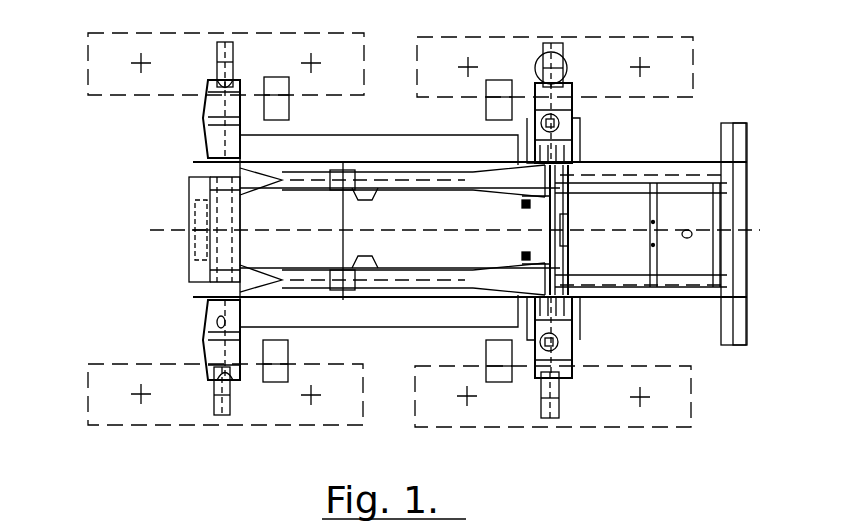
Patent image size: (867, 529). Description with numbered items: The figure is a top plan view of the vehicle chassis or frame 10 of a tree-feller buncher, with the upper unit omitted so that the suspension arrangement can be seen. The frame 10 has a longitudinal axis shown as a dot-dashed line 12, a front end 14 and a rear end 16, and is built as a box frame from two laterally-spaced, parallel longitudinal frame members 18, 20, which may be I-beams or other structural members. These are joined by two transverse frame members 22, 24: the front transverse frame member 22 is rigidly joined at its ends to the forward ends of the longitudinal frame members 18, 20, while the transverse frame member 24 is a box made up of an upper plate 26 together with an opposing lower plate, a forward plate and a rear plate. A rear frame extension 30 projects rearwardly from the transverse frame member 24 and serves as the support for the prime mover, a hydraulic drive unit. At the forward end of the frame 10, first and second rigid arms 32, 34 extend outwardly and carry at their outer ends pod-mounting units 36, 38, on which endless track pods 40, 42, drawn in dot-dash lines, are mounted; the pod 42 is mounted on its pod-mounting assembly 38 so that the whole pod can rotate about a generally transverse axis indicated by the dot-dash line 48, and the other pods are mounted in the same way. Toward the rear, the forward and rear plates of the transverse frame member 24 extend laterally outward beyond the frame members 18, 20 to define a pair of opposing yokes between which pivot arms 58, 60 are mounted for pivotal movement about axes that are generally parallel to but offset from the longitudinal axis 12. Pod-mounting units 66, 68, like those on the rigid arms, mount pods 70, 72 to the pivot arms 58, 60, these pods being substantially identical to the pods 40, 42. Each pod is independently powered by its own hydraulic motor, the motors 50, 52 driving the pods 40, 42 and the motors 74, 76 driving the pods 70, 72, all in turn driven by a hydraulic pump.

The vehicle frame 10 is at (771, 98).
The longitudinal axis 12 is at (695, 232).
The front end 14 is at (189, 200).
The rear end 16 is at (747, 252).
The longitudinal frame member 18 is at (378, 170).
The longitudinal frame member 20 is at (380, 300).
The front transverse frame member 22 is at (210, 248).
The transverse frame member 24 is at (577, 260).
The upper plate 26 is at (566, 217).
The rear frame extension 30 is at (652, 160).
The first rigid arm 32 is at (240, 80).
The second rigid arm 34 is at (240, 372).
The pod-mounting unit 36 is at (236, 42).
The pod-mounting unit 38 is at (232, 418).
The endless track pod 40 is at (88, 70).
The endless track pod 42 is at (88, 395).
The transverse axis 48 is at (218, 325).
The hydraulic motor 50 is at (289, 110).
The hydraulic motor 52 is at (288, 355).
The pivot arm 58 is at (570, 82).
The pivot arm 60 is at (572, 374).
The pod-mounting unit 66 is at (565, 43).
The pod-mounting unit 68 is at (562, 420).
The endless track pod 70 is at (693, 62).
The endless track pod 72 is at (691, 395).
The hydraulic motor 74 is at (486, 100).
The hydraulic motor 76 is at (486, 360).